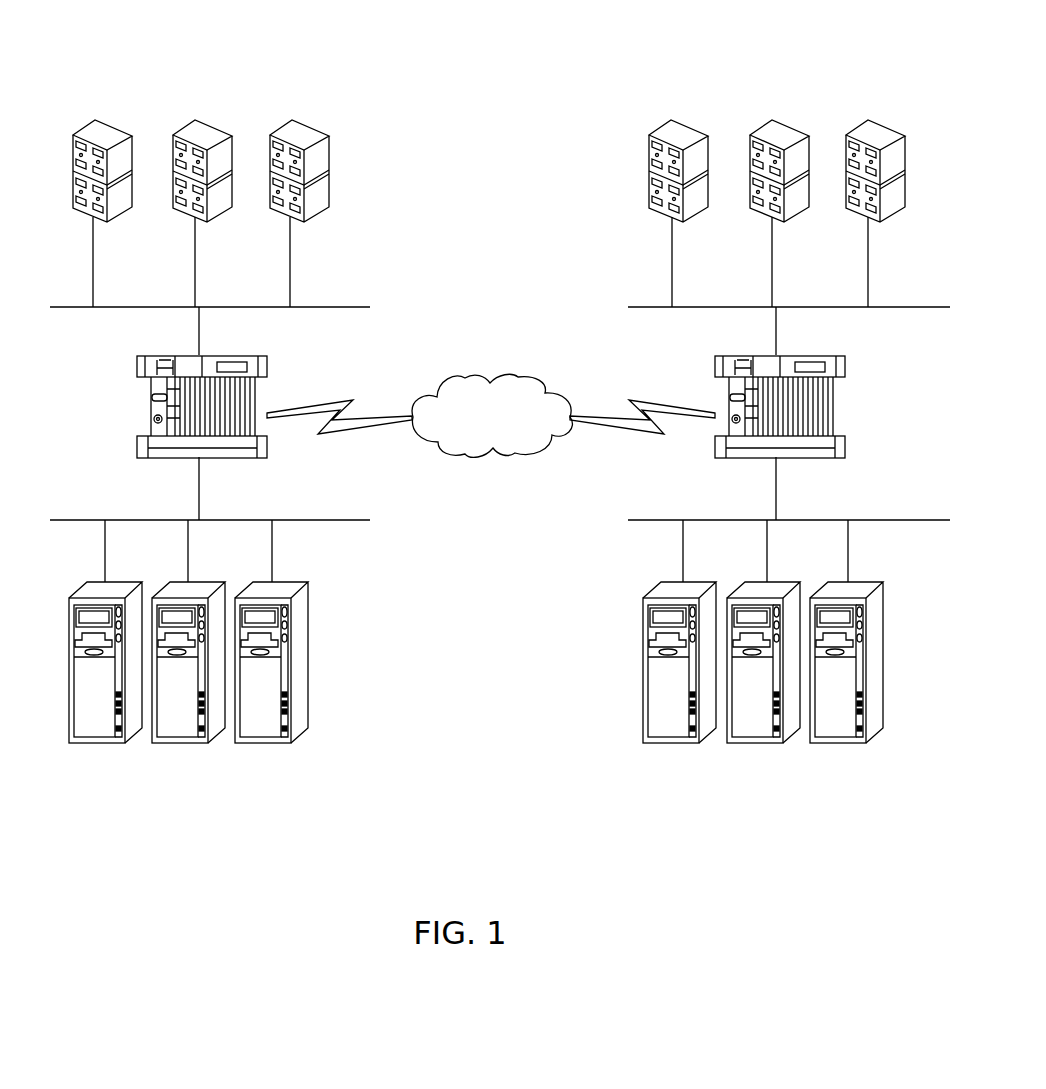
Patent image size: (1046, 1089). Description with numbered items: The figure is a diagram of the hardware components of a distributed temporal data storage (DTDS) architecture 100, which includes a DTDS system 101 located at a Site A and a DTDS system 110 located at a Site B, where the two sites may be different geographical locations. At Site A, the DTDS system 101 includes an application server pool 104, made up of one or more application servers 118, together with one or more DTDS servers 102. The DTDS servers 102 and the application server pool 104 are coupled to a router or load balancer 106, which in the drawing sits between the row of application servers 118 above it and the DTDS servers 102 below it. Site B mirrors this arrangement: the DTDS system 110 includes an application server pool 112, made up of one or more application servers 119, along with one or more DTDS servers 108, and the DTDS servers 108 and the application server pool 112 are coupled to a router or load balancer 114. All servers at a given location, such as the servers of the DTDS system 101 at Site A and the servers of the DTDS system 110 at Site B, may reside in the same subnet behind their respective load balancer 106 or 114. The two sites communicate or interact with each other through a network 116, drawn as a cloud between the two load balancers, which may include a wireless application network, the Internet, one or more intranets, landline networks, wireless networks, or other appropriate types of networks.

The distributed temporal data storage (DTDS) architecture 100 is at (468, 56).
The DTDS system 101 is at (128, 846).
The DTDS servers 102 is at (52, 752).
The application server pool 104 is at (55, 113).
The router or load balancer 106 is at (137, 417).
The DTDS servers 108 is at (623, 752).
The DTDS system 110 is at (755, 858).
The application server pool 112 is at (912, 113).
The router or load balancer 114 is at (843, 417).
The network 116 is at (490, 378).
The application servers 118 is at (120, 217).
The application servers 119 is at (698, 217).